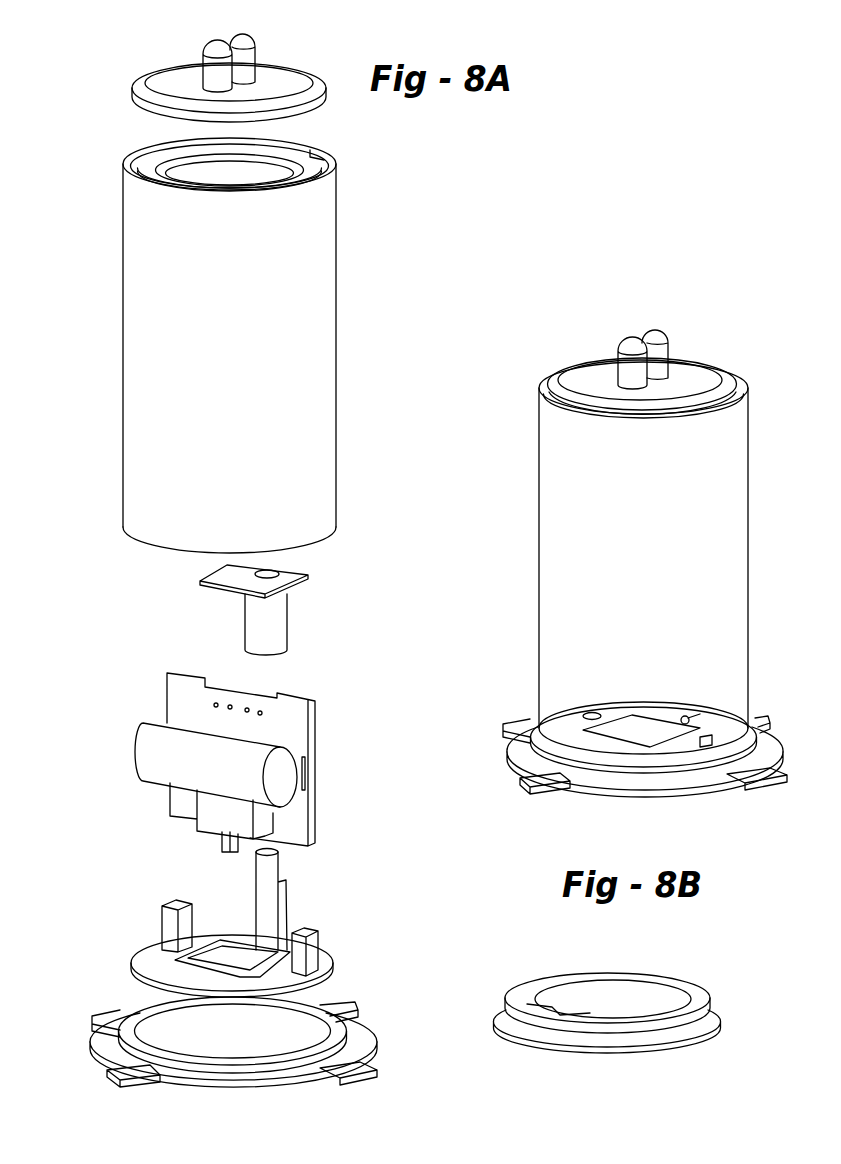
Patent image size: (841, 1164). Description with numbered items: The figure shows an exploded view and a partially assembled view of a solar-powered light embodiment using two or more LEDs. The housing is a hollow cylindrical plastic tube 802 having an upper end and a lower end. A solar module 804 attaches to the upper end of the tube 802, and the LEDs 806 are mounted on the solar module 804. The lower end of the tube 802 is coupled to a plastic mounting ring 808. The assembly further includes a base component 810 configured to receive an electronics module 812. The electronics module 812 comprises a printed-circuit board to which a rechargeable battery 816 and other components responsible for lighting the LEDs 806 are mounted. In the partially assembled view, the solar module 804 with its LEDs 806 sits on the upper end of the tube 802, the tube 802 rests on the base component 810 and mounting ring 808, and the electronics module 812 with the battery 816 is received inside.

In FIG. 8A, the hollow cylindrical plastic tube 802 is at (229, 345).
In FIG. 8B, the hollow cylindrical plastic tube 802 is at (643, 558).
In FIG. 8A, the solar module 804 is at (163, 78).
In FIG. 8A, the LEDs 806 is at (207, 52).
In FIG. 8A, the plastic mounting ring 808 is at (110, 1013).
In FIG. 8A, the base component 810 is at (148, 937).
In FIG. 8A, the electronics module 812 is at (146, 700).
In FIG. 8A, the rechargeable battery 816 is at (152, 751).